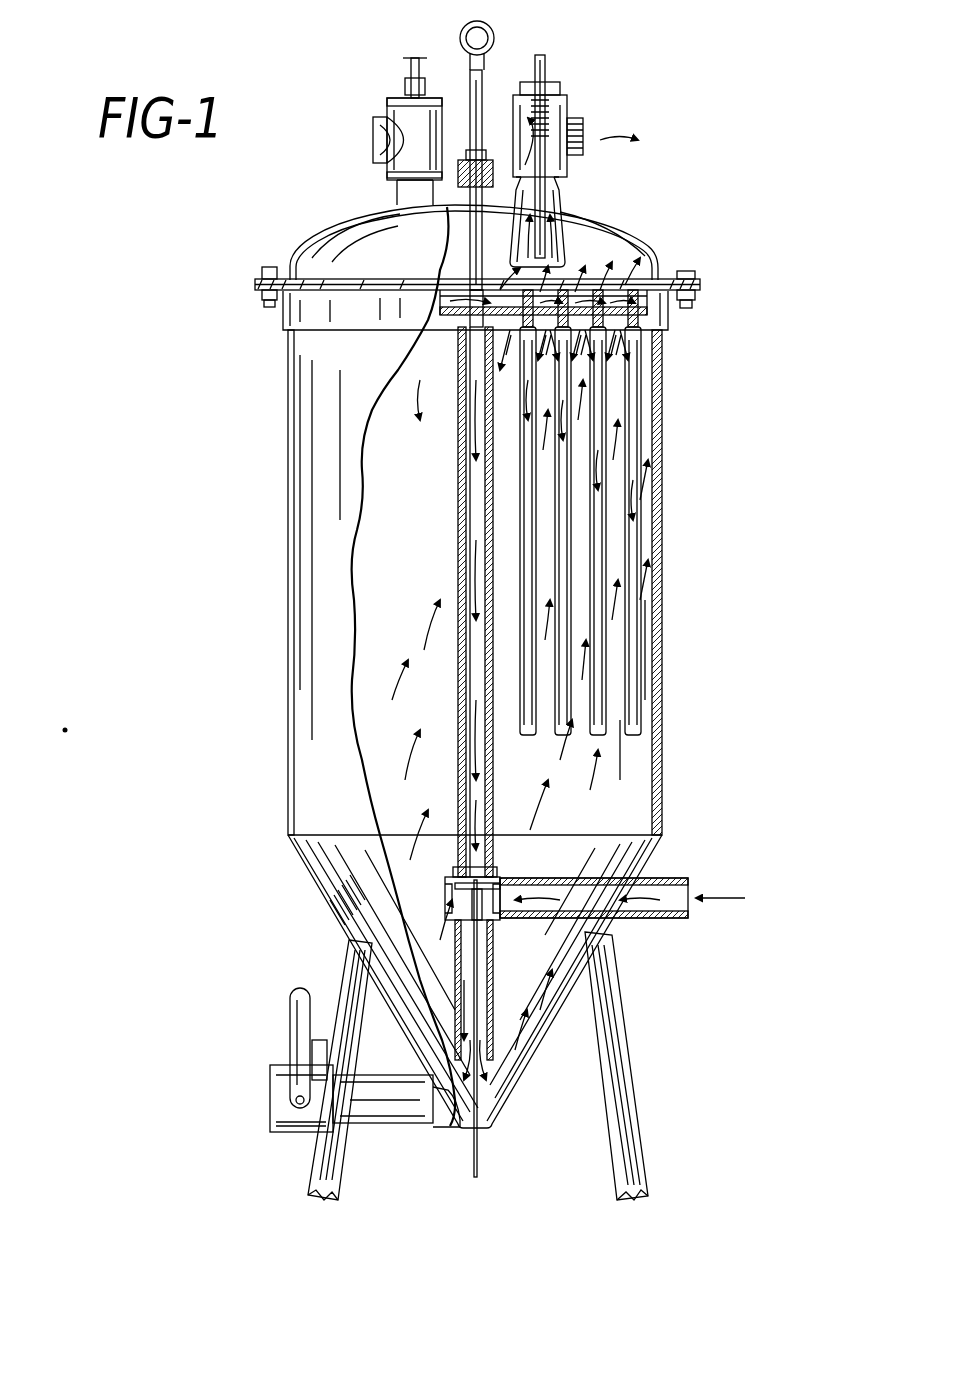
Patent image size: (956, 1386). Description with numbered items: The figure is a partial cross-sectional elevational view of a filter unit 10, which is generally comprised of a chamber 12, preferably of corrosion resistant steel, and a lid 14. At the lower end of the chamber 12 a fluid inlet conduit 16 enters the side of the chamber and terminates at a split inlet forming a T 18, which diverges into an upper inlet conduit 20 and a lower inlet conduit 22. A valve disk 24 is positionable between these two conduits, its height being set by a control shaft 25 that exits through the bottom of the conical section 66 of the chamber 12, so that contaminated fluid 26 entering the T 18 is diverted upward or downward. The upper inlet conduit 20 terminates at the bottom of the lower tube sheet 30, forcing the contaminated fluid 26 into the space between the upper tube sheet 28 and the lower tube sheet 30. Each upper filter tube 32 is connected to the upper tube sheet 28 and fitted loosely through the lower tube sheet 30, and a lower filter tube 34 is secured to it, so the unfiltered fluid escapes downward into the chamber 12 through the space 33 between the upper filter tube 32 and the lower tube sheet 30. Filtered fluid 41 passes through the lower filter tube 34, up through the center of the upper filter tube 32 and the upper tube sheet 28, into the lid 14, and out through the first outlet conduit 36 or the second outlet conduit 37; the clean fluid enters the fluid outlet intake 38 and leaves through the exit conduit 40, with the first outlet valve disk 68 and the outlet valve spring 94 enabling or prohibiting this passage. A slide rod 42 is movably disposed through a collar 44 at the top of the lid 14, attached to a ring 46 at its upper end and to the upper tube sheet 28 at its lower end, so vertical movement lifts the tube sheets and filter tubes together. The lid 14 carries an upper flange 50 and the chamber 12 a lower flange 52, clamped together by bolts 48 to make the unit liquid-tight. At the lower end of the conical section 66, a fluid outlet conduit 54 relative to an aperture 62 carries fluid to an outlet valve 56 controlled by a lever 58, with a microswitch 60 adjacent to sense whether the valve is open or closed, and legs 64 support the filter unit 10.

The filter unit 10 is at (226, 546).
The chamber 12 is at (288, 434).
The lid 14 is at (322, 245).
The fluid inlet conduit 16 is at (670, 918).
The split inlet T 18 is at (458, 876).
The upper inlet conduit 20 is at (494, 792).
The lower inlet conduit 22 is at (494, 954).
The valve disk 24 is at (462, 921).
The control shaft 25 is at (479, 1150).
The contaminated fluid 26 is at (714, 896).
The upper tube sheet 28 is at (445, 272).
The lower tube sheet 30 is at (438, 312).
The upper filter tube 32 is at (617, 292).
The space 33 is at (640, 320).
The lower filter tube 34 is at (607, 362).
The first outlet conduit 36 is at (593, 166).
The second outlet conduit 37 is at (352, 157).
The fluid outlet intake 38 is at (553, 244).
The exit conduit 40 is at (586, 130).
The filtered fluid 41 is at (650, 139).
The slide rod 42 is at (485, 88).
The collar 44 is at (468, 170).
The ring 46 is at (490, 33).
The bolts 48 is at (266, 266).
The upper flange 50 is at (255, 282).
The lower flange 52 is at (262, 298).
The fluid outlet conduit 54 is at (392, 1123).
The outlet valve 56 is at (271, 1082).
The lever 58 is at (290, 1012).
The microswitch 60 is at (318, 1040).
The aperture 62 is at (452, 1128).
The legs 64 is at (322, 1169).
The conical section 66 is at (325, 900).
The first outlet valve disk 68 is at (546, 194).
The outlet valve spring 94 is at (546, 122).